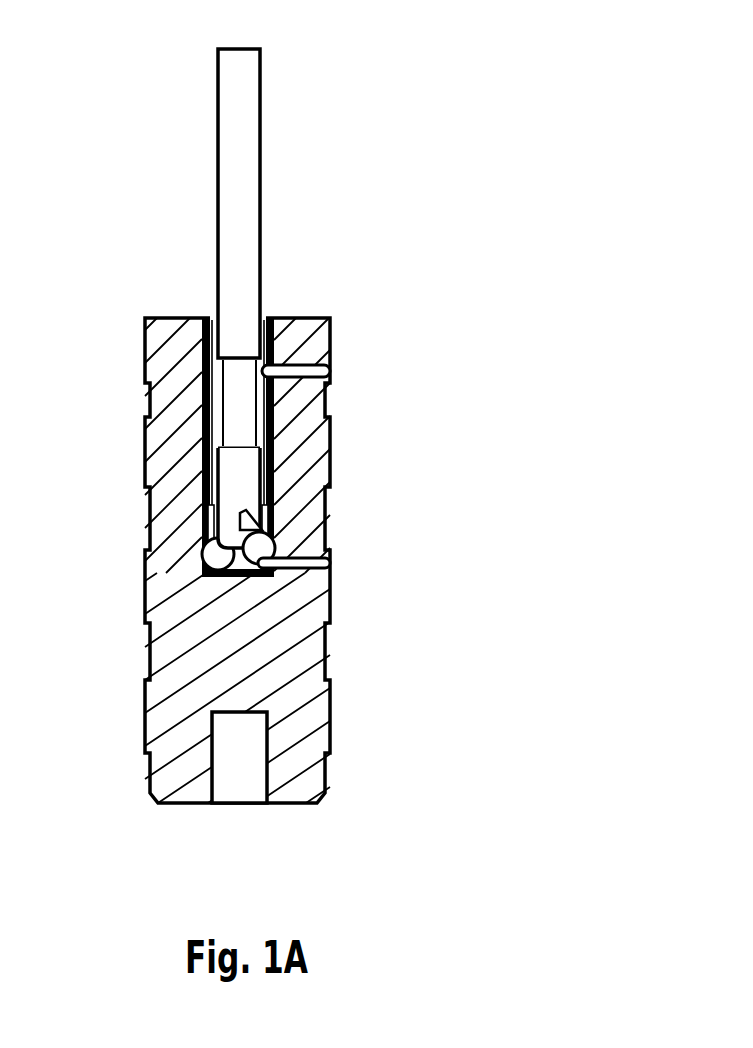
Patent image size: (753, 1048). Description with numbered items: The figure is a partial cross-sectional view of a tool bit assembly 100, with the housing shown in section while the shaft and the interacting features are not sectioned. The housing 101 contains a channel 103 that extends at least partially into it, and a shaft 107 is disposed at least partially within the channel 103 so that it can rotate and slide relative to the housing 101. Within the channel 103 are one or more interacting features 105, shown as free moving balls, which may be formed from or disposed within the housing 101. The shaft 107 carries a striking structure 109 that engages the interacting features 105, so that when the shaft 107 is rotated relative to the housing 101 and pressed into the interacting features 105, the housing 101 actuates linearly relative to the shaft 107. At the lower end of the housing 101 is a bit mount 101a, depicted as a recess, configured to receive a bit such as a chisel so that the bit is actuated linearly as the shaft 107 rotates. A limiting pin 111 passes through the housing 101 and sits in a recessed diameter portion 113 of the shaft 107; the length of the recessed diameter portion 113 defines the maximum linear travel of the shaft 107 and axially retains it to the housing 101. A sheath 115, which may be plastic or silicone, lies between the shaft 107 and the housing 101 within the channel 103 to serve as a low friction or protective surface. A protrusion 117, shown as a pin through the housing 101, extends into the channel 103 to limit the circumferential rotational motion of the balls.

The tool bit assembly 100 is at (345, 190).
The housing 101 is at (148, 318).
The bit mount 101a is at (250, 785).
The channel 103 is at (285, 507).
The interacting features 105 is at (205, 580).
The shaft 107 is at (248, 275).
The striking structure 109 is at (204, 541).
The limiting pin 111 is at (330, 369).
The recessed diameter portion 113 is at (329, 437).
The sheath 115 is at (200, 393).
The protrusion 117 is at (330, 565).